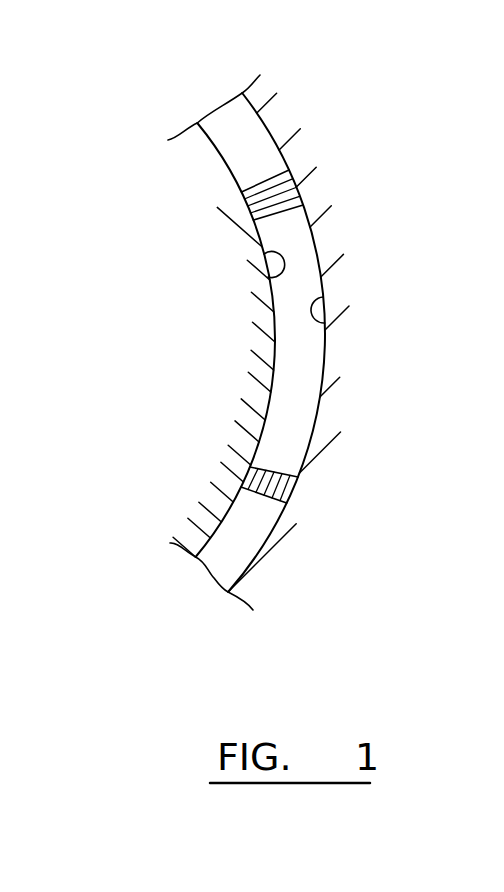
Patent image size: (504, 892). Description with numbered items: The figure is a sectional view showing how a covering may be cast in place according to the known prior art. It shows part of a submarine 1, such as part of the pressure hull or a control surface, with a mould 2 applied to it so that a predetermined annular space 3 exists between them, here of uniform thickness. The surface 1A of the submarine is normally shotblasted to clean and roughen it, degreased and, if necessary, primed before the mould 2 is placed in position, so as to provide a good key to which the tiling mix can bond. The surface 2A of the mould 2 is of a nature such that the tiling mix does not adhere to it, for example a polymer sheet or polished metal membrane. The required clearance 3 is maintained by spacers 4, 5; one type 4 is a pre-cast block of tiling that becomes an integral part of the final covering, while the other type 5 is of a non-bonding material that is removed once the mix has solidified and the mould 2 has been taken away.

The submarine 1 is at (257, 340).
The surface of submarine 1A is at (266, 252).
The mould 2 is at (328, 247).
The surface of mould 2A is at (325, 322).
The annular space 3 is at (295, 395).
The spacer 4 is at (282, 193).
The spacer 5 is at (273, 490).